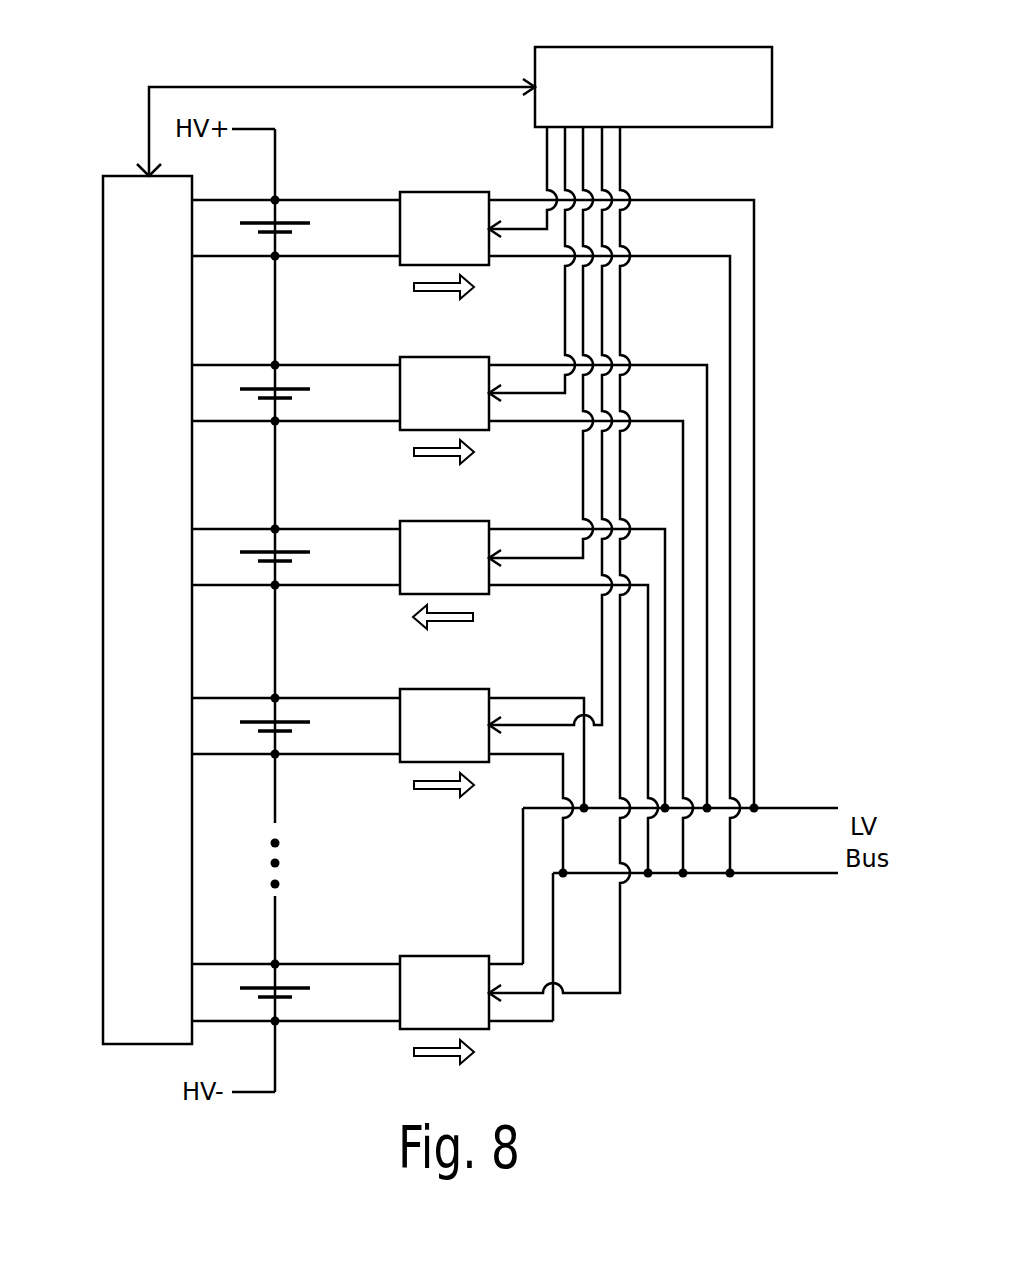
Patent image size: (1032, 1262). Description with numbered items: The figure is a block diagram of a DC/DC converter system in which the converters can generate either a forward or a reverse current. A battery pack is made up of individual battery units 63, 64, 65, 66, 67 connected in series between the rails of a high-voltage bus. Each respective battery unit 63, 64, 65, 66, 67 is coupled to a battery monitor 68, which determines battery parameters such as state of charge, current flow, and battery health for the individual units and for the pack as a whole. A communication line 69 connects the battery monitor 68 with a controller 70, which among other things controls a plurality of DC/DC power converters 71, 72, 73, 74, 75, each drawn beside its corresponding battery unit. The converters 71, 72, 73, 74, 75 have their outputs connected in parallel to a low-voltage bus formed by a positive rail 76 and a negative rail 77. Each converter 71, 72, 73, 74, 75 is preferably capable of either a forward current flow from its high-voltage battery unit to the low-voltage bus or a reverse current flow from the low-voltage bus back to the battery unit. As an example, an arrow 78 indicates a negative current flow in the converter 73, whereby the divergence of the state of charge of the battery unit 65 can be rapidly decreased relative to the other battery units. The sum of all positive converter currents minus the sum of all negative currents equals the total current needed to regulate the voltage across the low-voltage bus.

The battery unit 63 is at (295, 222).
The battery unit 64 is at (300, 388).
The battery unit 65 is at (298, 551).
The battery unit 66 is at (252, 720).
The battery unit 67 is at (251, 987).
The battery monitor 68 is at (102, 406).
The communication line 69 is at (365, 85).
The controller 70 is at (773, 60).
The DC/DC power converter 71 is at (418, 191).
The DC/DC power converter 72 is at (468, 356).
The DC/DC power converter 73 is at (418, 520).
The DC/DC power converter 74 is at (412, 688).
The DC/DC power converter 75 is at (417, 955).
The positive rail 76 is at (795, 806).
The negative rail 77 is at (773, 878).
The arrow 78 is at (453, 622).